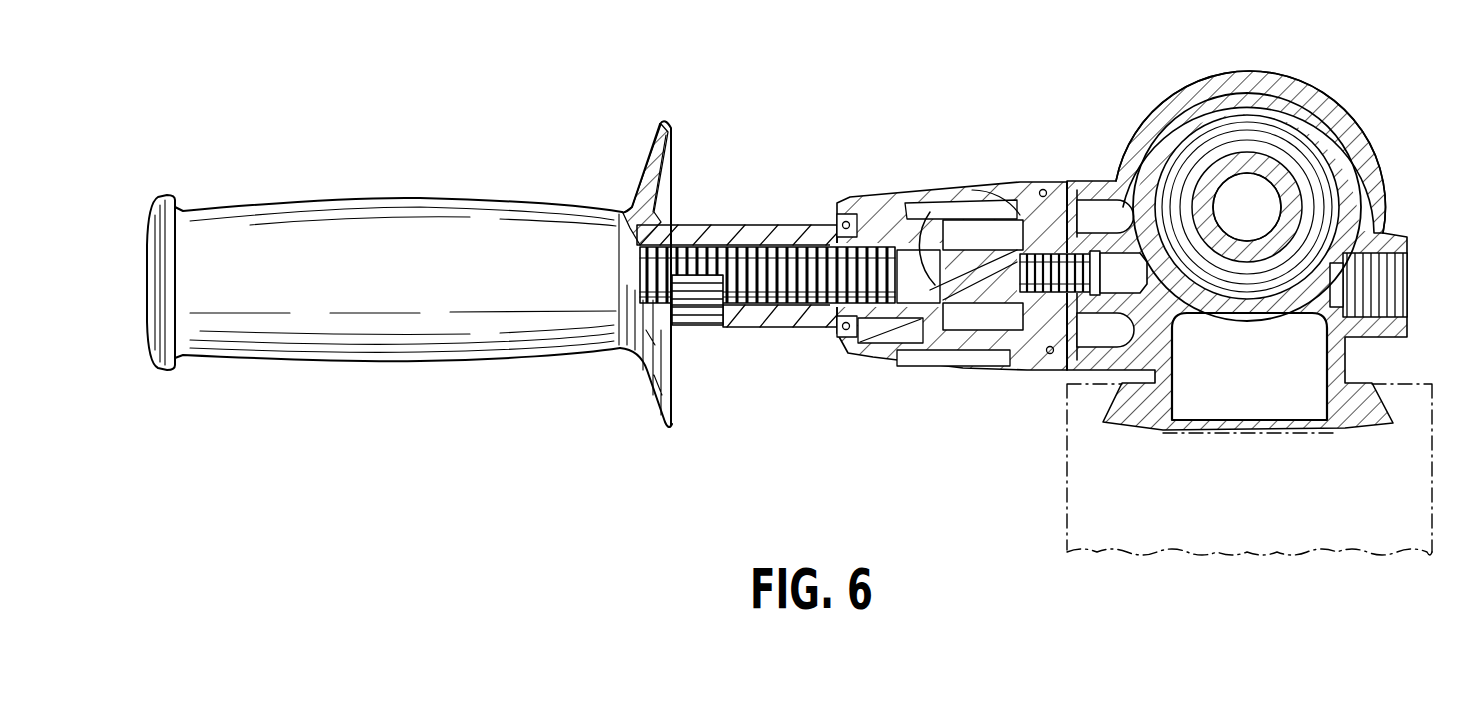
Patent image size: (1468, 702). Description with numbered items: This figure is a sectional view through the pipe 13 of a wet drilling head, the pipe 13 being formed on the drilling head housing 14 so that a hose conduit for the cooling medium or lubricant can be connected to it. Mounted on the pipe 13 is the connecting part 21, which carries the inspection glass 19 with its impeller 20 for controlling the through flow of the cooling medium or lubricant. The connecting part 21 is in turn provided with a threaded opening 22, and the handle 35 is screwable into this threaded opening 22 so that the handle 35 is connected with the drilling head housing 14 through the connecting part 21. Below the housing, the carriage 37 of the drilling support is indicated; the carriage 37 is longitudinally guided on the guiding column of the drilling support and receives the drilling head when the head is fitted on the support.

The pipe 13 is at (1108, 180).
The drilling head housing 14 is at (1298, 120).
The inspection glass 19 is at (942, 200).
The impeller 20 is at (1003, 228).
The connecting part 21 is at (849, 198).
The threaded opening 22 is at (811, 243).
The handle 35 is at (697, 228).
The carriage 37 is at (1082, 479).